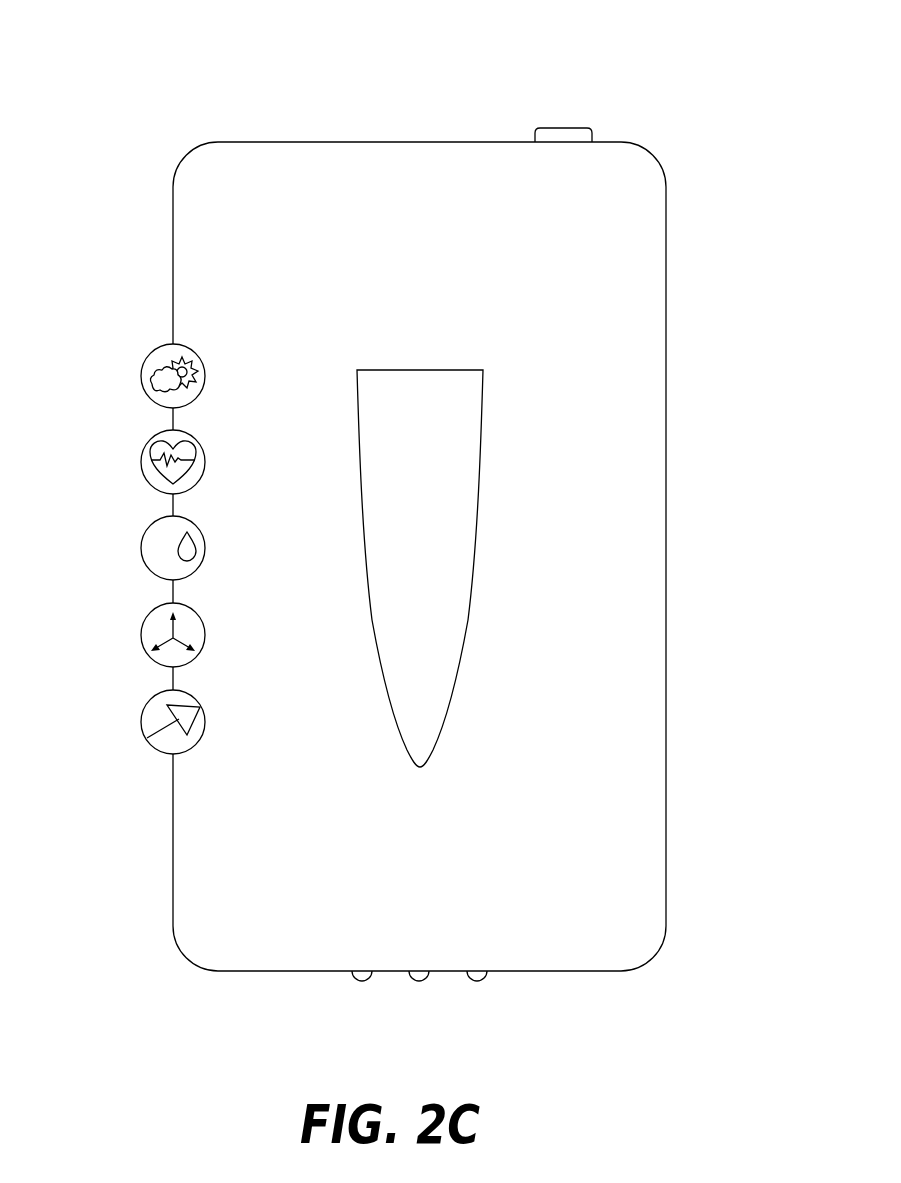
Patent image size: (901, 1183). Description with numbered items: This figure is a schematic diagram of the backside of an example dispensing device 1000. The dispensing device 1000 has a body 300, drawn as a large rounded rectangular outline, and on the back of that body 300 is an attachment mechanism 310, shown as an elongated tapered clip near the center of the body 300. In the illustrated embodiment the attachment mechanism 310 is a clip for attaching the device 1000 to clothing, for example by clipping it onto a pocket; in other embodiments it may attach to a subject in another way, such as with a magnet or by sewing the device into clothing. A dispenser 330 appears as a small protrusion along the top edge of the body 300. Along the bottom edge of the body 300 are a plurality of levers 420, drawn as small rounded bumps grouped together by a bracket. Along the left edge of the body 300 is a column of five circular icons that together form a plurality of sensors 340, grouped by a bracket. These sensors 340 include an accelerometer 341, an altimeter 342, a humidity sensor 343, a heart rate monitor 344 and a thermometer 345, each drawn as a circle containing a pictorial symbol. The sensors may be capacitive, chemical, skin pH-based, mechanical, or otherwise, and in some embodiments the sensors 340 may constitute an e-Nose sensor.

The dispensing device 1000 is at (152, 62).
The body 300 is at (390, 250).
The attachment mechanism 310 is at (462, 535).
The dispenser 330 is at (570, 131).
The sensors 340 is at (83, 332).
The accelerometer 341 is at (141, 722).
The altimeter 342 is at (141, 635).
The humidity sensor 343 is at (141, 548).
The heart rate monitor 344 is at (141, 462).
The thermometer 345 is at (141, 376).
The levers 420 is at (497, 981).